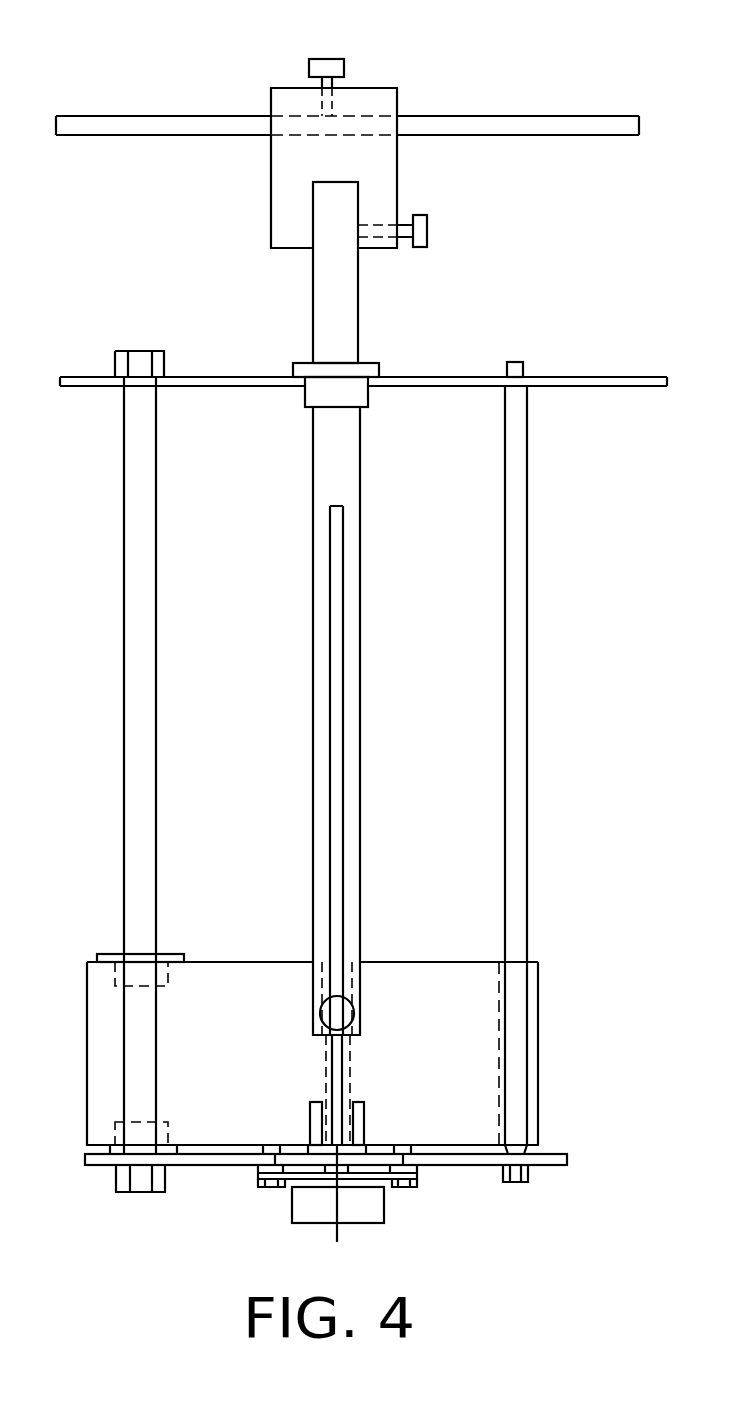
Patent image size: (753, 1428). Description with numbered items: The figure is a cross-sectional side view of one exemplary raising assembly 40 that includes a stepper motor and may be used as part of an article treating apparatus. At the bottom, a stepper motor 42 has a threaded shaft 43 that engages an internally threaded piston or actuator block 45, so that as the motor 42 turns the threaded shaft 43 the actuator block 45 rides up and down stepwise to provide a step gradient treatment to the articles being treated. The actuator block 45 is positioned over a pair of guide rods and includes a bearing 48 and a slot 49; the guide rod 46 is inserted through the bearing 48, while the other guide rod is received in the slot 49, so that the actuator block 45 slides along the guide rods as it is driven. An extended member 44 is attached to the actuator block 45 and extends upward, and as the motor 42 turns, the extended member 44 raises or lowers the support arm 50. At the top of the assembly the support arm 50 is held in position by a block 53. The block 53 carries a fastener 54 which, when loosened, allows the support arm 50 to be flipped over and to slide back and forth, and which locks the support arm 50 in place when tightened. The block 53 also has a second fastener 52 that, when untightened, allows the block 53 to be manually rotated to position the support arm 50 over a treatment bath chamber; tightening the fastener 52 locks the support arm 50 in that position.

The raising assembly 40 is at (492, 78).
The stepper motor 42 is at (362, 1205).
The threaded shaft 43 is at (347, 1088).
The extended member 44 is at (350, 752).
The actuator block 45 is at (462, 1050).
The guide rod 46 is at (527, 758).
The bearing 48 is at (125, 1039).
The slot 49 is at (499, 985).
The support arm 50 is at (577, 125).
The second fastener 52 is at (427, 229).
The block 53 is at (383, 180).
The fastener 54 is at (332, 65).